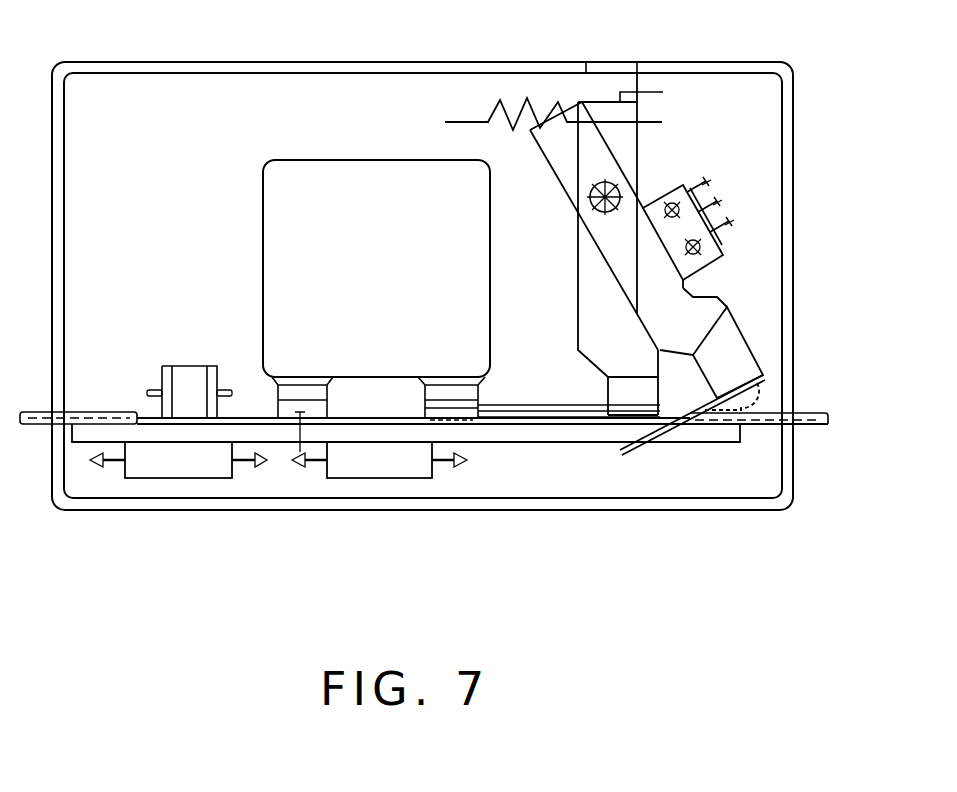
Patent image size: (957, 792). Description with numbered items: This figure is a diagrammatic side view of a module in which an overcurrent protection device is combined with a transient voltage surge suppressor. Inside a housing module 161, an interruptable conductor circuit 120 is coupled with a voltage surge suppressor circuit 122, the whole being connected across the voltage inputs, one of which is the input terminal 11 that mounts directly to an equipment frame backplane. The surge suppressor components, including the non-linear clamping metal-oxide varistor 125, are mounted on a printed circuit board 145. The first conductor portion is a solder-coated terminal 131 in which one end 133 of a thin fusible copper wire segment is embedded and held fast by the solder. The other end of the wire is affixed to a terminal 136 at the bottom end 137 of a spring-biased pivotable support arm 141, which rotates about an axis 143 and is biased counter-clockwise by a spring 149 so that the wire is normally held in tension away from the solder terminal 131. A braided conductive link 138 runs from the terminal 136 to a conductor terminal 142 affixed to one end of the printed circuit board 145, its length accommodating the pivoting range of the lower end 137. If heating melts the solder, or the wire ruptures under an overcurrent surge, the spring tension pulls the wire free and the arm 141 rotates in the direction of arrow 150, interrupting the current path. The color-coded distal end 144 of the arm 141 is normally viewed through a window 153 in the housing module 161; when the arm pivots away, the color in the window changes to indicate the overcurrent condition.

The first input terminal 11 is at (815, 427).
The interruptable conductor circuit 120 is at (760, 141).
The voltage surge suppressor circuit 122 is at (161, 218).
The metal-oxide varistor 125 is at (360, 260).
The solder-coated terminal 131 is at (448, 400).
The end of translatable conductor portion 133 is at (425, 410).
The terminal 136 is at (740, 357).
The bottom end of support arm 137 is at (725, 318).
The braided conductive link 138 is at (760, 387).
The spring-biased pivotable support arm 141 is at (578, 333).
The conductor terminal 142 is at (810, 412).
The axis 143 is at (588, 193).
The distal end of arm 144 is at (666, 100).
The printed circuit board 145 is at (81, 433).
The spring 149 is at (500, 100).
The arrow 150 is at (590, 243).
The window 153 is at (610, 73).
The housing module 161 is at (795, 127).